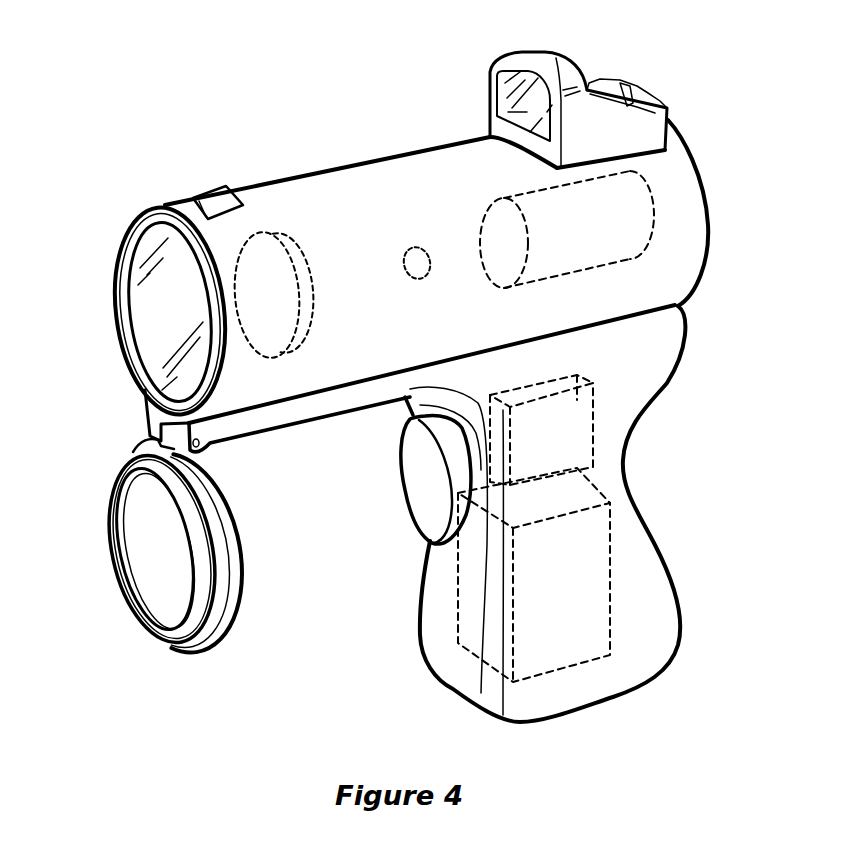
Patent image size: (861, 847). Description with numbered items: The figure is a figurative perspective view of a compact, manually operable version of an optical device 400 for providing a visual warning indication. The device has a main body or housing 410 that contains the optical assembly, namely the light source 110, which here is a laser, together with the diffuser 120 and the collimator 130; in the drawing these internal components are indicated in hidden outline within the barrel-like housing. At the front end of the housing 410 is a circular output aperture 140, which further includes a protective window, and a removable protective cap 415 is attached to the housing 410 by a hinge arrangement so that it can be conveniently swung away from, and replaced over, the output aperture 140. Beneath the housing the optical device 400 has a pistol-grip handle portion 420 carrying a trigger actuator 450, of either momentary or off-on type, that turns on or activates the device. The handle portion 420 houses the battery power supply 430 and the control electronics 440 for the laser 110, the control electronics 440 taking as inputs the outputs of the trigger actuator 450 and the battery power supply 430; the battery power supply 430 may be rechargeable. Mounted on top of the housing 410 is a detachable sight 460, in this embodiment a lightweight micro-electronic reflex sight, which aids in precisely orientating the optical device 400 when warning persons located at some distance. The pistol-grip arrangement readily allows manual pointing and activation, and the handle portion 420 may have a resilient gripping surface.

The optical device 400 is at (157, 163).
The housing 410 is at (316, 217).
The diffuser 120 is at (405, 254).
The detachable sight 460 is at (503, 104).
The light source 110 is at (625, 222).
The circular output aperture 140 is at (152, 316).
The collimator 130 is at (273, 297).
The removable protective cap 415 is at (140, 528).
The trigger actuator 450 is at (424, 472).
The control electronics 440 is at (565, 423).
The battery power supply 430 is at (587, 560).
The handle portion 420 is at (650, 632).